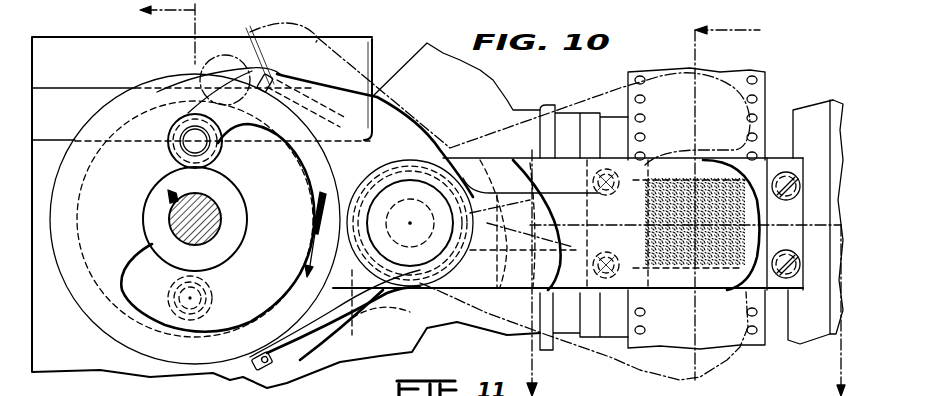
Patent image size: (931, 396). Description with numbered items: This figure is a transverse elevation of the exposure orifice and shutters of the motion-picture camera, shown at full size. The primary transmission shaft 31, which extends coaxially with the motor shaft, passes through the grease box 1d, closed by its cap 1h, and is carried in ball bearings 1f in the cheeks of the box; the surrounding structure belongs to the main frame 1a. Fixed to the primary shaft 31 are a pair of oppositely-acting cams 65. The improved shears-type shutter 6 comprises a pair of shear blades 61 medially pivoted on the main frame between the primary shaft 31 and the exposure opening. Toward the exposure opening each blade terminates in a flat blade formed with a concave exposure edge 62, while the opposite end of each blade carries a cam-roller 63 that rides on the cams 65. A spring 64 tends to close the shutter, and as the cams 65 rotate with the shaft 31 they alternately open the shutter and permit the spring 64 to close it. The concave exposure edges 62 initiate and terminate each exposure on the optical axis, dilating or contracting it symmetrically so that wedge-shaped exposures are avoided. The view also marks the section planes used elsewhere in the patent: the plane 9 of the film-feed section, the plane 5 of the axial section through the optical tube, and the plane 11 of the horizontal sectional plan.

The cap 1h is at (70, 52).
The grease box 1d is at (286, 294).
The frame 1a is at (512, 108).
The primary transmission shaft 31 is at (176, 221).
The shears-type shutter 6 is at (460, 223).
The shear blades 61 is at (436, 134).
The concave exposure edges 62 is at (701, 178).
The cam-rollers 63 is at (178, 153).
The spring 64 is at (276, 82).
The cams 65 is at (88, 270).
The ball bearings f is at (750, 345).
The section plane 9- 9 is at (177, 34).
The section plane 5- 5 is at (719, 196).
The section plane 11- 11 is at (686, 273).